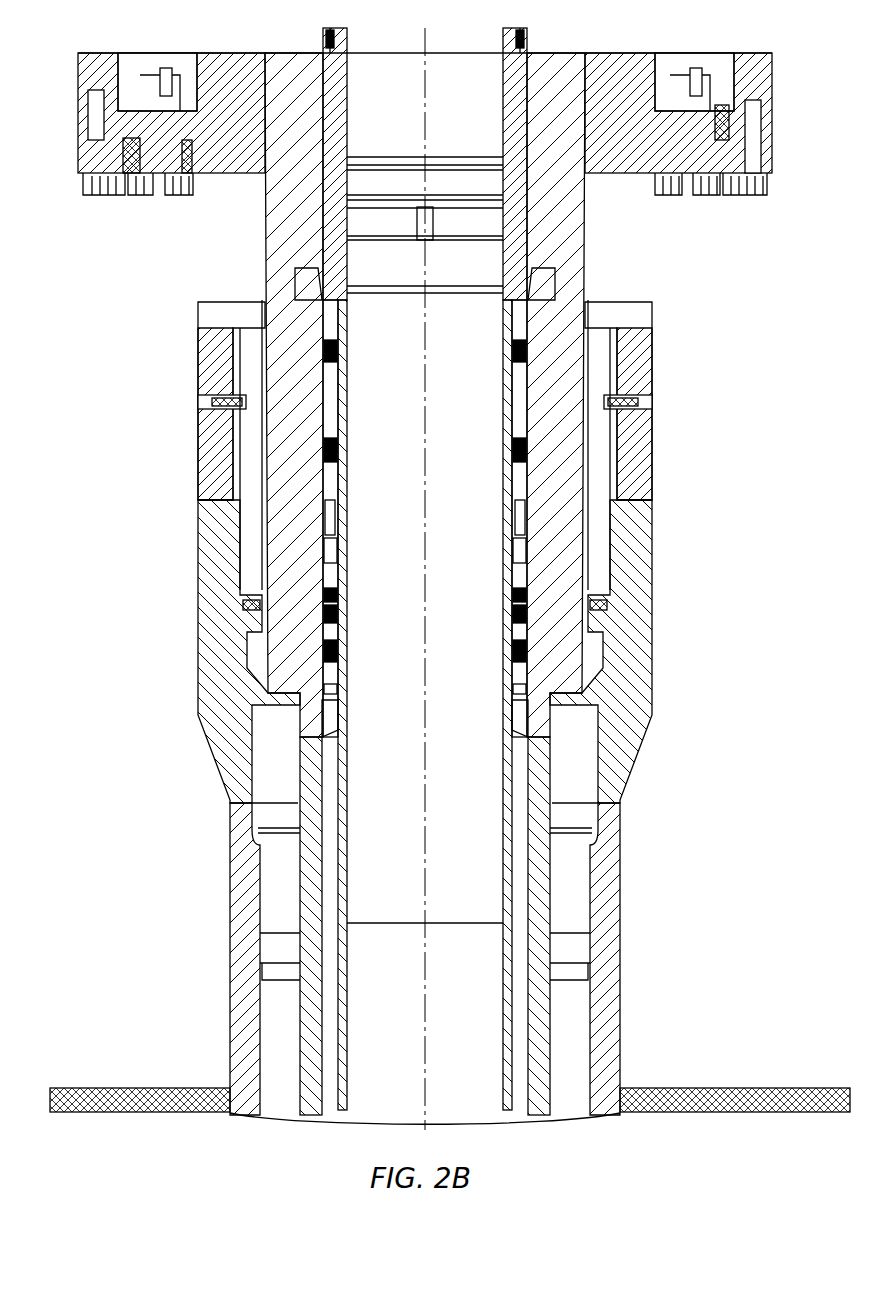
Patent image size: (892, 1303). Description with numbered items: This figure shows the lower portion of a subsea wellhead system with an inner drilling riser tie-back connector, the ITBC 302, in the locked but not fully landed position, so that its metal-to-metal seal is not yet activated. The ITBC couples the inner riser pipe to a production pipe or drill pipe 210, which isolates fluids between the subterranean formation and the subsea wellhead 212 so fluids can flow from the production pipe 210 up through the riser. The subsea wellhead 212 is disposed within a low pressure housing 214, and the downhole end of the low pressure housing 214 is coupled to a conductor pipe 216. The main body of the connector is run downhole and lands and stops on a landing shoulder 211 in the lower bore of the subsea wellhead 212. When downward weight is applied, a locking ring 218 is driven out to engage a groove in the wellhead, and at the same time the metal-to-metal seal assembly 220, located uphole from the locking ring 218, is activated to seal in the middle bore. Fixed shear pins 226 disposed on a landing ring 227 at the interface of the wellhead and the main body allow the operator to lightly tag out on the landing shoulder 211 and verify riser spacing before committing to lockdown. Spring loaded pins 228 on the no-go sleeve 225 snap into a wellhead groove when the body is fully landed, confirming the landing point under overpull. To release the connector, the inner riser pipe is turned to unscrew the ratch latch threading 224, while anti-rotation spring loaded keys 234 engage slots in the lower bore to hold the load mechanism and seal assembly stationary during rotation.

The production pipe or drill pipe 210 is at (277, 835).
The landing shoulder 211 is at (525, 598).
The subsea wellhead 212 is at (583, 222).
The low pressure housing 214 is at (648, 728).
The conductor pipe 216 is at (620, 932).
The locking ring 218 is at (528, 446).
The metal-to-metal seal assembly 220 is at (530, 352).
The ratch latch threading 224 is at (527, 540).
The no-go sleeve 225 is at (527, 518).
The shear pins 226 is at (340, 690).
The landing ring 227 is at (345, 722).
The spring loaded pins 228 is at (515, 605).
The anti-rotation spring loaded keys 234 is at (528, 654).
The ITBC 302 is at (522, 296).